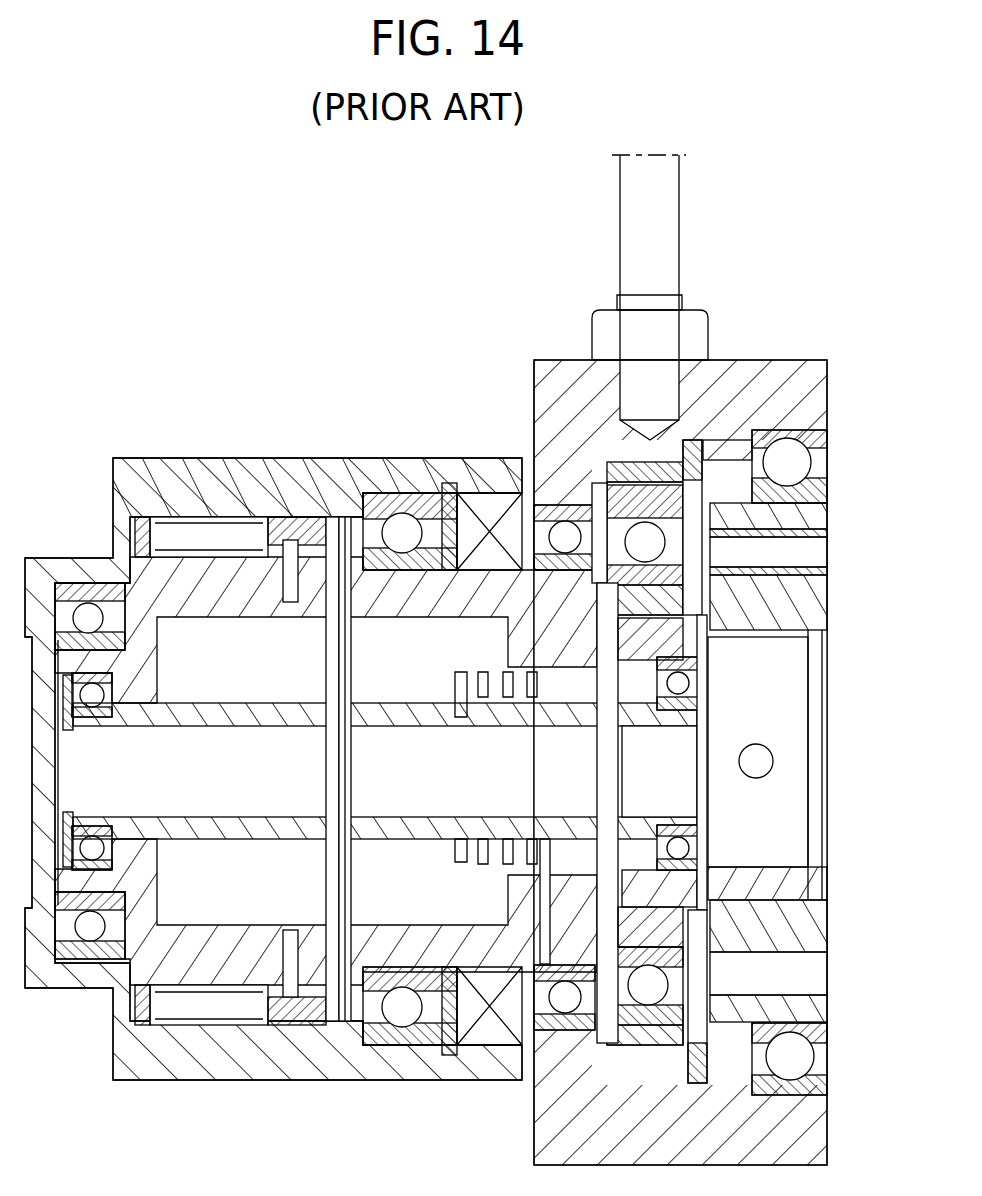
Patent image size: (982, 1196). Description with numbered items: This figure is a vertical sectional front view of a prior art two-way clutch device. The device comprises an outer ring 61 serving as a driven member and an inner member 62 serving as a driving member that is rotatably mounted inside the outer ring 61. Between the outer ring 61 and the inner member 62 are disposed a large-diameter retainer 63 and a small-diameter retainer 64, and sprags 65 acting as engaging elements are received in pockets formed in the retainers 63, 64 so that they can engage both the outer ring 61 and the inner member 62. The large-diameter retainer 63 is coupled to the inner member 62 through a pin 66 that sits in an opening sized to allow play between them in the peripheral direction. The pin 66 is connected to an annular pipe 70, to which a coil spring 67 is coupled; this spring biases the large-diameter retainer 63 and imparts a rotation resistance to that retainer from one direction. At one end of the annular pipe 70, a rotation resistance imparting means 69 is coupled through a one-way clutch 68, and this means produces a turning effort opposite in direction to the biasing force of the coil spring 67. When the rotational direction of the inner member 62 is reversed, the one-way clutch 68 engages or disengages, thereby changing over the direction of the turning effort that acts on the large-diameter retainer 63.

The outer ring 61 is at (153, 490).
The inner member 62 is at (383, 588).
The large-diameter retainer 63 is at (328, 518).
The small-diameter retainer 64 is at (278, 522).
The sprags 65 is at (225, 537).
The pin 66 is at (336, 773).
The coil spring 67 is at (485, 672).
The one-way clutch 68 is at (632, 470).
The rotation resistance imparting means 69 is at (690, 521).
The annular pipe 70 is at (430, 827).